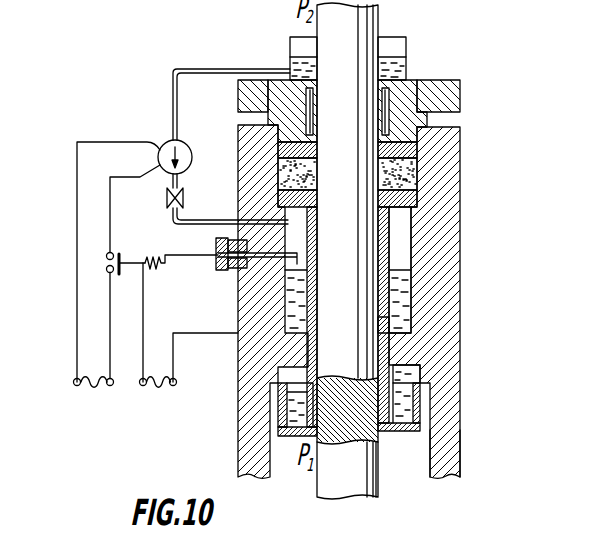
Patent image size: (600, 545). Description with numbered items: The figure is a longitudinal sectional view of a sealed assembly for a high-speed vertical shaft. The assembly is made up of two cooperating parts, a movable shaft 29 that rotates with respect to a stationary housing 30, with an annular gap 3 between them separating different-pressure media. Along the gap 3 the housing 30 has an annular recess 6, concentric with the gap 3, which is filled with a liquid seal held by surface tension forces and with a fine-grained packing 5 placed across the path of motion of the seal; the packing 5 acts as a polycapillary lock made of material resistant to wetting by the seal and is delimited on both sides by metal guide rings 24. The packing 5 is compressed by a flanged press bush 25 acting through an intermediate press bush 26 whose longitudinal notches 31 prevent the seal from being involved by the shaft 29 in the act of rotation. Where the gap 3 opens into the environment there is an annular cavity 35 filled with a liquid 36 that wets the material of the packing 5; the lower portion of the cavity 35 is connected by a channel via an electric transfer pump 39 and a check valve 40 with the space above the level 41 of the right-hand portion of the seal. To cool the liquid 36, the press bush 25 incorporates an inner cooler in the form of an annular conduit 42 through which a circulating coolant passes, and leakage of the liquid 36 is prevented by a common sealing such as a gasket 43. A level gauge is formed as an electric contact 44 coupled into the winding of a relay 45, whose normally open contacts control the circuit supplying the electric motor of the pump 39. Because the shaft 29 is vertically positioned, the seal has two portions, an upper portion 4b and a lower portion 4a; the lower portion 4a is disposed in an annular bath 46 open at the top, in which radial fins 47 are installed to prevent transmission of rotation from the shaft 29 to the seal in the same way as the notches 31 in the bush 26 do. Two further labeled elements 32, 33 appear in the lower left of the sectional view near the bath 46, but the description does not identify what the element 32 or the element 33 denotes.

The annular gap 3 is at (278, 183).
The lower portion 4a is at (282, 430).
The upper portion 4b is at (395, 325).
The fine-grained packing 5 is at (438, 175).
The annular recess 6 is at (420, 247).
The metal guide rings 24 is at (452, 147).
The flanged press bush 25 is at (447, 93).
The intermediate press bush 26 is at (300, 288).
The shaft 29 is at (378, 483).
The housing 30 is at (447, 447).
The longitudinal notches 31 is at (385, 303).
The liquid in cup 32 is at (287, 418).
The cup 33 is at (300, 382).
The annular cavity 35 is at (398, 50).
The liquid 36 is at (297, 70).
The electric transfer pump 39 is at (165, 144).
The check valve 40 is at (164, 213).
The level 41 is at (395, 262).
The annular conduit 42 is at (393, 100).
The gasket 43 is at (272, 112).
The electric contact 44 is at (218, 268).
The relay 45 is at (148, 255).
The annular bath 46 is at (413, 402).
The radial fins 47 is at (400, 373).